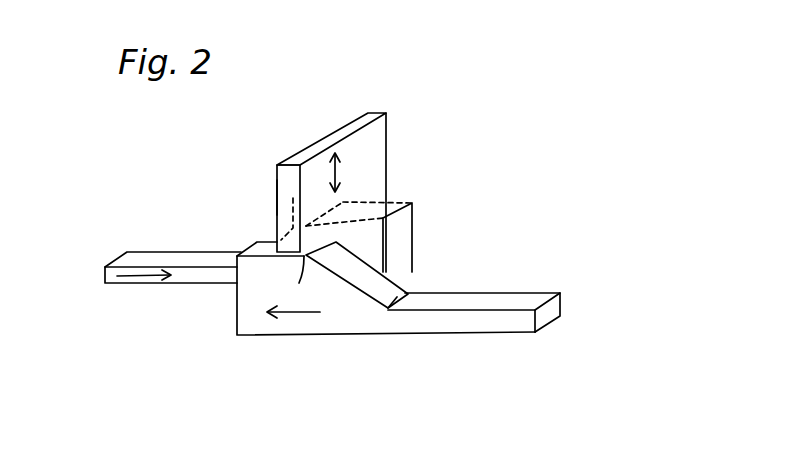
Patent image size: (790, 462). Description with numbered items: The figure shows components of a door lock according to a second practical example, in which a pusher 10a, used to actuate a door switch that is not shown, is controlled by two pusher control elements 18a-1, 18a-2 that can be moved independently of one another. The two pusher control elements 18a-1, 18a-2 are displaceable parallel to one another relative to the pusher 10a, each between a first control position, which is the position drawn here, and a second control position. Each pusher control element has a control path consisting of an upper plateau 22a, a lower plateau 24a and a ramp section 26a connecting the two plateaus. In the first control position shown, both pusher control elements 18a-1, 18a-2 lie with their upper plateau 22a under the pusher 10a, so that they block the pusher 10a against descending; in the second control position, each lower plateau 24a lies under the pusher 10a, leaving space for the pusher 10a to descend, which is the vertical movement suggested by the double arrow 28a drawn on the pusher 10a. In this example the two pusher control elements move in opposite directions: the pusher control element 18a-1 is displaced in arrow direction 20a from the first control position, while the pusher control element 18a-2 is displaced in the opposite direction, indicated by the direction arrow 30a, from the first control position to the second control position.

The pusher 10a is at (386, 135).
The pusher control element 18a-1 is at (345, 337).
The pusher control element 18a-2 is at (417, 240).
The arrow direction 20a is at (292, 318).
The upper plateau 22a is at (309, 244).
The lower plateau 24a is at (223, 258).
The ramp section 26a is at (278, 198).
The vertical movement arrow 28a is at (341, 171).
The direction arrow 30a is at (135, 285).